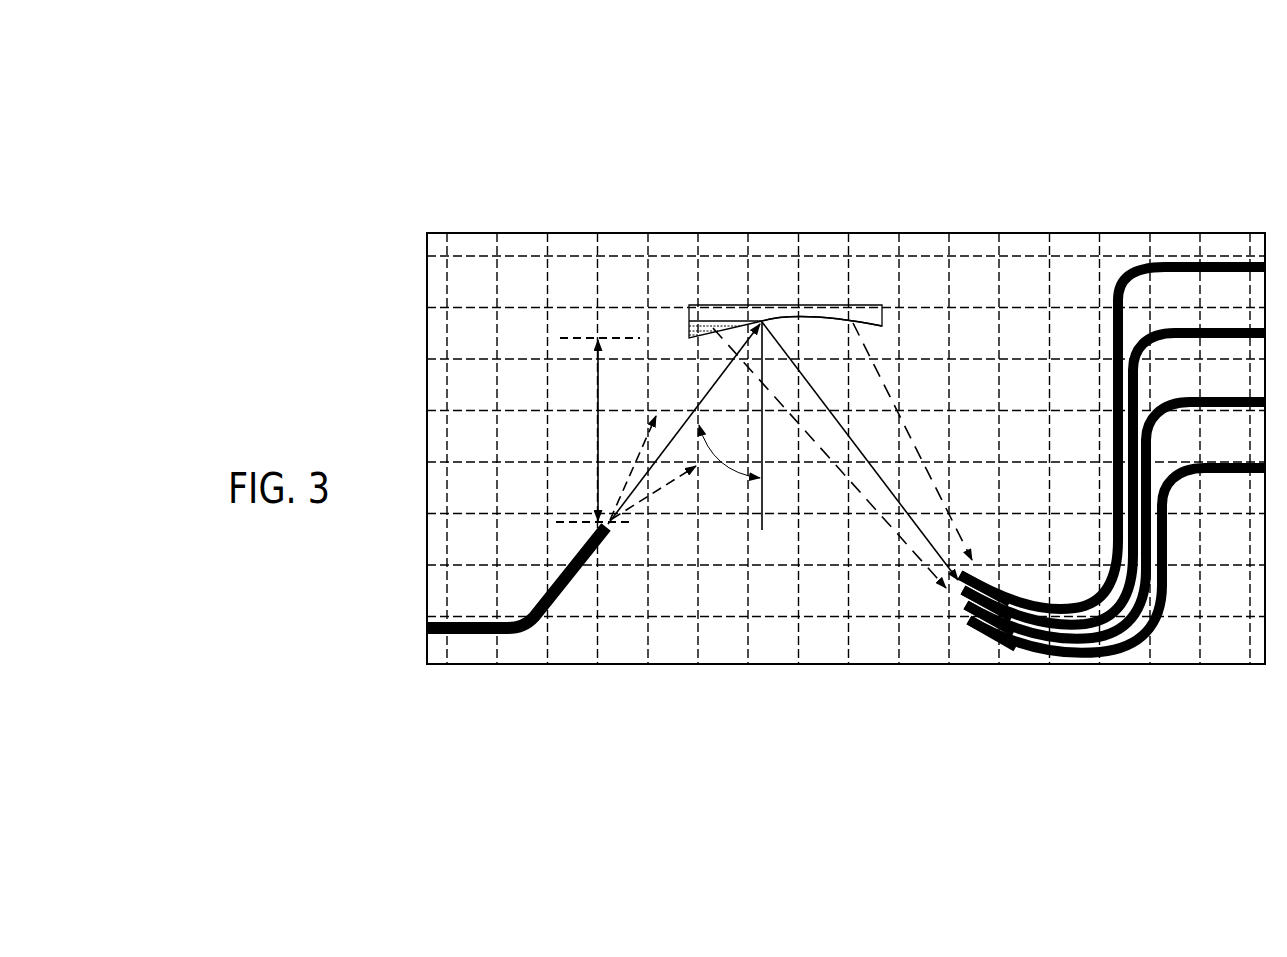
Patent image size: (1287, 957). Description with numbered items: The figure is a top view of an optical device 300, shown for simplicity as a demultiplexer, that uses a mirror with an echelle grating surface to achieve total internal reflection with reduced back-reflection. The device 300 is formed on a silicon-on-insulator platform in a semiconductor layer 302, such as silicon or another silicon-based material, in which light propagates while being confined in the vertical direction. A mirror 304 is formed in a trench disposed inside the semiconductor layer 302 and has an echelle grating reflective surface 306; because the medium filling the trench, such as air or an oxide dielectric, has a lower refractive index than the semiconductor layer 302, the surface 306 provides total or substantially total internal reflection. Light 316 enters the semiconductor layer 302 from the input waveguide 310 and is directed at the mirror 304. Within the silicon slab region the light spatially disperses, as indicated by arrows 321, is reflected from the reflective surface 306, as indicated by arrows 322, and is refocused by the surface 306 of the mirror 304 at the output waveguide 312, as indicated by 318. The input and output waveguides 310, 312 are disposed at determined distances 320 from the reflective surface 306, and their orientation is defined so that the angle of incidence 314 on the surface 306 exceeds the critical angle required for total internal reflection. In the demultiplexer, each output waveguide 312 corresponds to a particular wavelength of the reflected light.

The optical device 300 is at (988, 108).
The semiconductor layer 302 is at (1200, 665).
The mirror 304 is at (768, 305).
The echelle grating reflective surface 306 is at (808, 327).
The input waveguide 310 is at (500, 634).
The output waveguide 312 is at (1045, 652).
The angle of incidence 314 is at (730, 475).
The light 316 is at (668, 450).
The refocused light 318 is at (921, 533).
The determined distances 320 is at (598, 400).
The arrows indicating spatial dispersion 321 is at (613, 527).
The arrows indicating reflection 322 is at (895, 405).